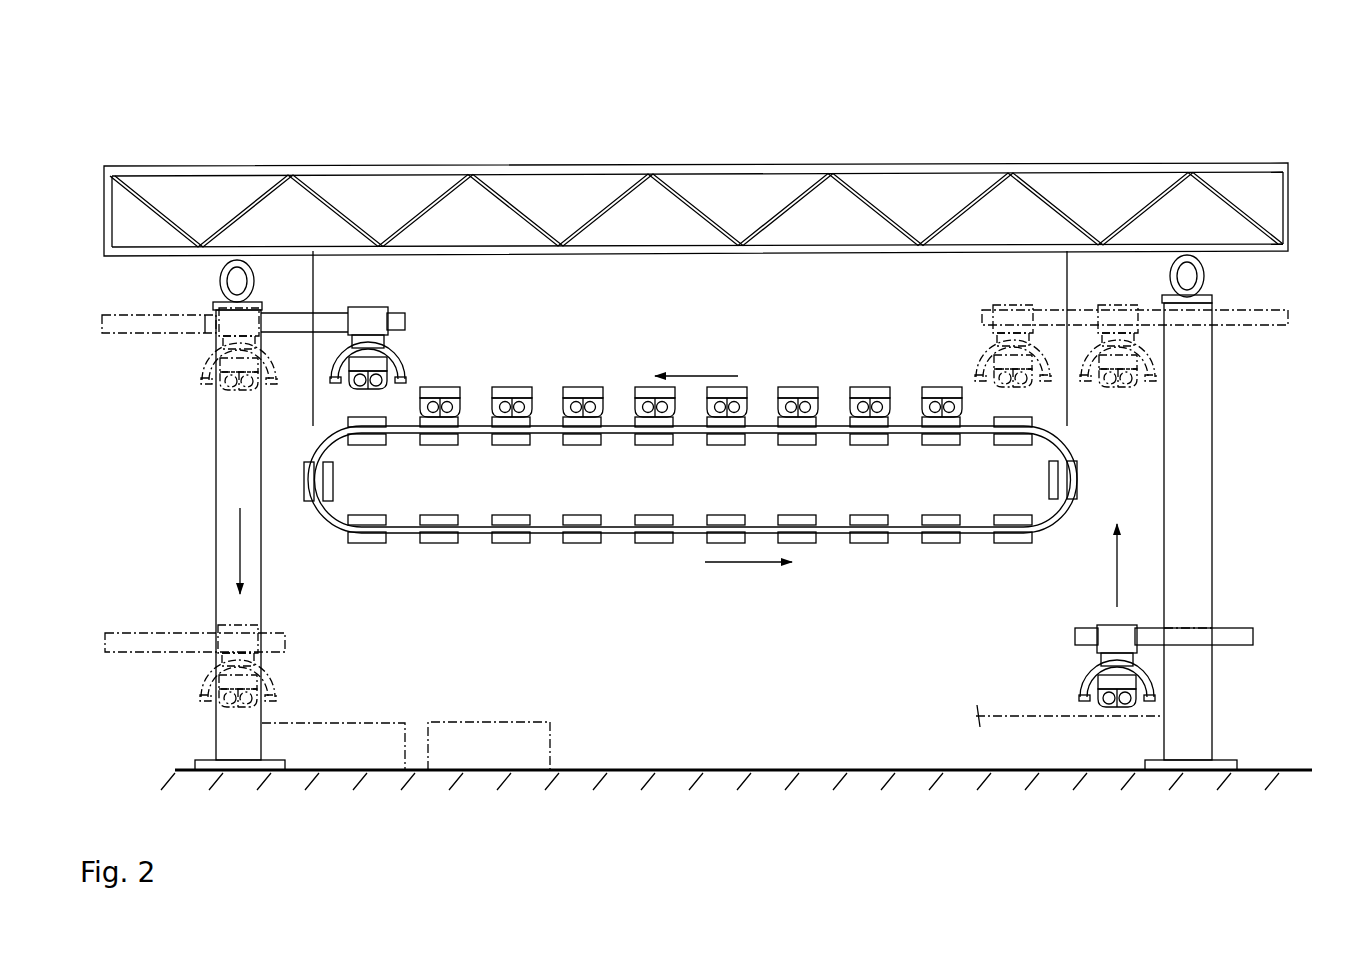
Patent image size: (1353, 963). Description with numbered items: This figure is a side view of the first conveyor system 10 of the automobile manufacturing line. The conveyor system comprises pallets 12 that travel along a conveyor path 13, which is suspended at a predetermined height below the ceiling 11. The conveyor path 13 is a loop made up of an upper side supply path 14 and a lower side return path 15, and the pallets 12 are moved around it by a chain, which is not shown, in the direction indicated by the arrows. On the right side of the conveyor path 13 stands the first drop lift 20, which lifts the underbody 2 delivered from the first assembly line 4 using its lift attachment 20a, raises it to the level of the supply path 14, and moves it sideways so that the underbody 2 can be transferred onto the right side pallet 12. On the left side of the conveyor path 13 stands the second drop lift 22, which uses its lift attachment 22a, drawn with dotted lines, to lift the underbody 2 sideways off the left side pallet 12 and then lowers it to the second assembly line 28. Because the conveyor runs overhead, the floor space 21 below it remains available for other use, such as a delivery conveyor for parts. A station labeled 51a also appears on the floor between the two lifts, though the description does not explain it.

The first conveyor system 10 is at (236, 152).
The ceiling 11 is at (808, 165).
The pallet 12 is at (585, 545).
The conveyor path 13 is at (690, 451).
The upper side supply path 14 is at (690, 427).
The lower side return path 15 is at (548, 552).
The underbody 2 is at (590, 393).
The first drop lift 20 is at (1216, 517).
The lift attachment 20a is at (1090, 365).
The second drop lift 22 is at (216, 506).
The lift attachment 22a is at (334, 366).
The floor space 21 is at (690, 777).
The second assembly line 28 is at (348, 724).
The machining station 51a is at (530, 722).
The first assembly line 4 is at (1012, 707).